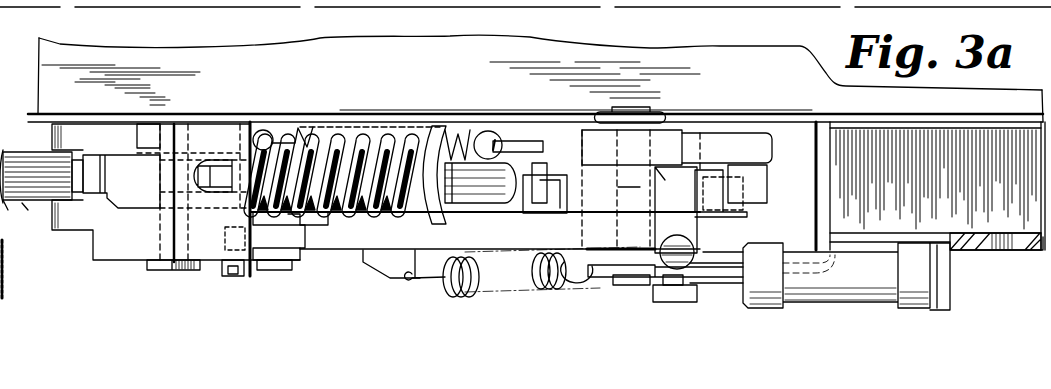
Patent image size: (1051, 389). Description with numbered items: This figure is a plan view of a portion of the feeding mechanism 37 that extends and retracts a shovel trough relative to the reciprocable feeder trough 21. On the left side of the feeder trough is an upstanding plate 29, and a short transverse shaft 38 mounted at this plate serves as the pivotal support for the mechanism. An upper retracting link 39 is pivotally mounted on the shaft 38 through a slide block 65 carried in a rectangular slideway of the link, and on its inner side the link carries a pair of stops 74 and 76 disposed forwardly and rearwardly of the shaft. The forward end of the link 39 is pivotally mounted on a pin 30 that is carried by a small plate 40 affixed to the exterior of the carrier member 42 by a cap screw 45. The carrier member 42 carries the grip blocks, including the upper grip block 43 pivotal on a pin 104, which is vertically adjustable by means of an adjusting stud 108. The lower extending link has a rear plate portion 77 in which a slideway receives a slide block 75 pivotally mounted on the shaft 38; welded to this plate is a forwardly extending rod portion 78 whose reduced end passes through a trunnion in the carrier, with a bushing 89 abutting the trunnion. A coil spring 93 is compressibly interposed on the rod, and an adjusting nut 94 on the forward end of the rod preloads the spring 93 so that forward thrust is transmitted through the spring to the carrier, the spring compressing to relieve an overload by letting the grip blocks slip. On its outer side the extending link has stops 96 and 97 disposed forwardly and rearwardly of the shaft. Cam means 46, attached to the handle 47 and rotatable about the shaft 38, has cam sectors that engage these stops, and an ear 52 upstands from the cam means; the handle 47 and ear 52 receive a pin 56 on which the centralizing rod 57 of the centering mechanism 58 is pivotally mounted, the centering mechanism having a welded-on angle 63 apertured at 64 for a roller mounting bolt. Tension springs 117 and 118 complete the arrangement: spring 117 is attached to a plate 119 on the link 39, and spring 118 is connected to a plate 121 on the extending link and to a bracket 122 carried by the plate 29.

The feeder trough 21 is at (712, 55).
The upstanding plate 29 is at (730, 117).
The pin 30 is at (280, 262).
The feeding mechanism 37 is at (290, 272).
The transverse shaft 38 is at (638, 110).
The retracting link 39 is at (346, 262).
The small plate 40 is at (272, 271).
The carrier member 42 is at (87, 247).
The upper grip block 43 is at (108, 165).
The cap screw 45 is at (228, 278).
The cam means 46 is at (657, 210).
The handle 47 is at (692, 245).
The ear 52 is at (660, 296).
The pin 56 is at (676, 286).
The centralizing rod 57 is at (712, 284).
The centering mechanism 58 is at (848, 256).
The angle 63 is at (950, 282).
The aperture 64 is at (988, 230).
The slide block 65 is at (585, 237).
The stop 74 is at (555, 196).
The slide block 75 is at (672, 128).
The stop 76 is at (735, 212).
The rear plate portion 77 is at (565, 145).
The rod portion 78 is at (455, 210).
The bushing 89 is at (48, 158).
The coil spring 93 is at (322, 140).
The adjusting nut 94 is at (28, 210).
The stop 96 is at (535, 200).
The stop 97 is at (752, 182).
The pin 104 is at (168, 272).
The adjusting stud 108 is at (218, 170).
The tension spring 117 is at (462, 295).
The tension spring 118 is at (503, 108).
The plate 119 is at (380, 270).
The plate 121 is at (527, 141).
The bracket 122 is at (264, 128).